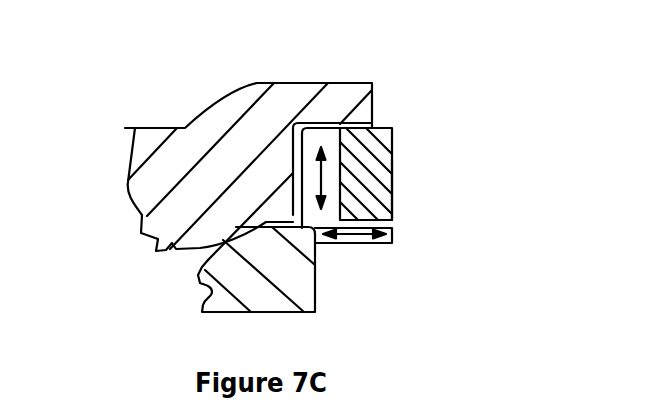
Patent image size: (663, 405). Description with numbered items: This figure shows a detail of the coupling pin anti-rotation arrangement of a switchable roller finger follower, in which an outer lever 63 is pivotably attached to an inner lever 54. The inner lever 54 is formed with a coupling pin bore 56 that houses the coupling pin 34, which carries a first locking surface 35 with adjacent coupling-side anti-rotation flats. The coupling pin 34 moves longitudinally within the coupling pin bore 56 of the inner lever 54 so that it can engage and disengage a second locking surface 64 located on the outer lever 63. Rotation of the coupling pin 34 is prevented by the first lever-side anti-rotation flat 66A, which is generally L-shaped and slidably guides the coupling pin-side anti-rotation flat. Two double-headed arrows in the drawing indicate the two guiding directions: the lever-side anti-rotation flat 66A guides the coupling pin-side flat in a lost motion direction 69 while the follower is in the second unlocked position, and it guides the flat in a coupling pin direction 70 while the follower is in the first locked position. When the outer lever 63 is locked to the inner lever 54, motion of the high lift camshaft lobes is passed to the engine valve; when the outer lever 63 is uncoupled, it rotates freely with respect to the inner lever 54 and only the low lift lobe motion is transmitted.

The coupling pin 34 is at (295, 285).
The first locking surface 35 is at (392, 203).
The inner lever 54 is at (337, 98).
The coupling pin bore 56 is at (143, 231).
The outer lever 63 is at (392, 162).
The second locking surface 64 is at (392, 229).
The first lever-side anti-rotation flat 66A is at (316, 140).
The lost motion direction 69 is at (373, 174).
The coupling pin direction 70 is at (363, 247).